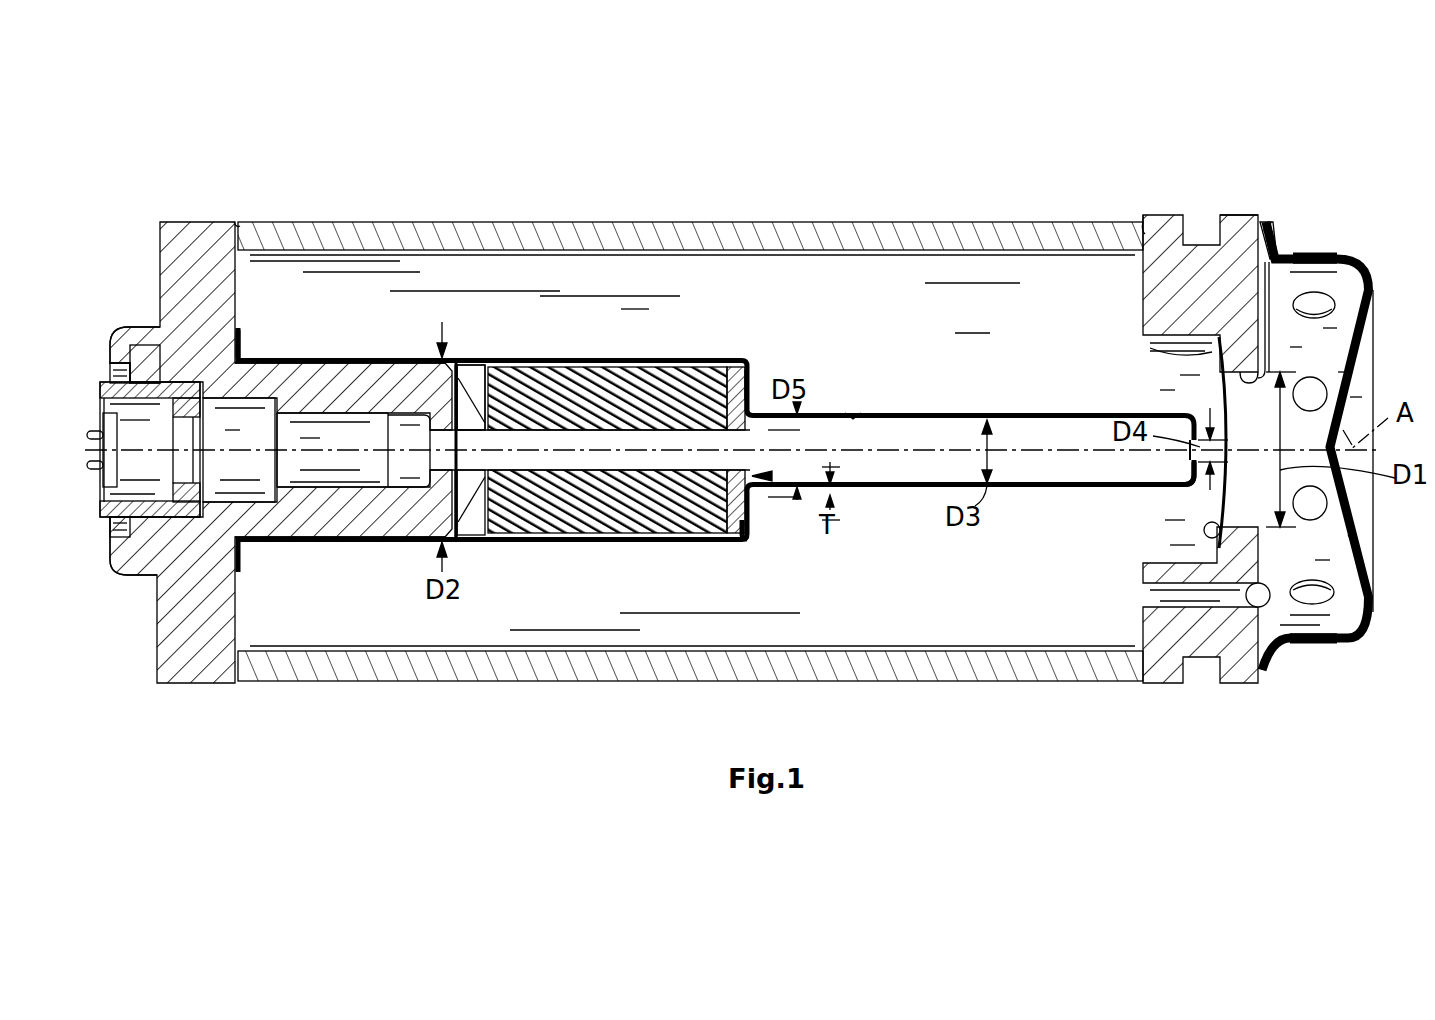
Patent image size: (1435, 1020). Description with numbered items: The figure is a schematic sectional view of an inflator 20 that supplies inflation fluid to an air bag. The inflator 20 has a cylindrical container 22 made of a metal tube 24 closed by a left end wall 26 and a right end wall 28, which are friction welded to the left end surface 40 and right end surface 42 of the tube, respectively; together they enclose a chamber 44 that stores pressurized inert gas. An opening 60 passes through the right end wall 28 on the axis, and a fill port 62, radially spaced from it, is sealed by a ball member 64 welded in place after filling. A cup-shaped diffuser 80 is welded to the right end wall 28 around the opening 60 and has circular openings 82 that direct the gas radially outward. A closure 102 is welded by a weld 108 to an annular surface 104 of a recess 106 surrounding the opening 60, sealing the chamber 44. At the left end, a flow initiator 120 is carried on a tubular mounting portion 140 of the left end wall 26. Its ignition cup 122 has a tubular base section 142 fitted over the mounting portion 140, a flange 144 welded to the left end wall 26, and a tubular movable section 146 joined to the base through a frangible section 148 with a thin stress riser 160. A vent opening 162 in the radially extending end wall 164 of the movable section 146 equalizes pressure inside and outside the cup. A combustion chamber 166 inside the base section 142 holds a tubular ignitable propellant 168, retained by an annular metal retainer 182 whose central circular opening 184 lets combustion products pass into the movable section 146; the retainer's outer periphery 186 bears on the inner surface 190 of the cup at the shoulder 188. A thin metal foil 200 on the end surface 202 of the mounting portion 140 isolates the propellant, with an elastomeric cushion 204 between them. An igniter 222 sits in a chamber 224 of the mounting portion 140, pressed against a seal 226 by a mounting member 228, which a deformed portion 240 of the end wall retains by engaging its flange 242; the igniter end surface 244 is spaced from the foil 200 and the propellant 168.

The inflator 20 is at (1258, 155).
The cylindrical container 22 is at (1128, 215).
The metal tube 24 is at (680, 222).
The left end wall 26 is at (203, 219).
The right end wall 28 is at (1163, 215).
The left end surface 40 is at (232, 227).
The right end surface 42 is at (1150, 217).
The chamber 44 is at (634, 297).
The opening 60 is at (1268, 285).
The fill port 62 is at (1143, 597).
The ball member 64 is at (1270, 597).
The cup-shaped diffuser 80 is at (1372, 272).
The circular openings 82 is at (1318, 256).
The closure 102 is at (1218, 410).
The annular surface 104 is at (1220, 525).
The recess 106 is at (1140, 550).
The weld 108 is at (1213, 357).
The flow initiator 120 is at (743, 350).
The ignition cup 122 is at (752, 358).
The tubular mounting portion 140 is at (348, 385).
The tubular base section 142 is at (296, 360).
The flange 144 is at (243, 345).
The tubular movable section 146 is at (1032, 411).
The frangible section 148 is at (853, 405).
The stress riser 160 is at (852, 488).
The vent opening 162 is at (1192, 452).
The radially extending end wall 164 is at (1190, 496).
The combustion chamber 166 is at (478, 366).
The ignitable propellant 168 is at (640, 392).
The annular metal retainer 182 is at (783, 493).
The circular opening 184 is at (740, 468).
The outer periphery 186 is at (731, 542).
The shoulder 188 is at (748, 545).
The inner surface 190 is at (647, 525).
The thin metal foil 200 is at (483, 537).
The end surface 202 is at (458, 365).
The elastomeric cushion 204 is at (462, 540).
The igniter 222 is at (305, 467).
The chamber 224 is at (408, 463).
The seal 226 is at (282, 490).
The mounting member 228 is at (147, 350).
The deformed portion 240 is at (107, 550).
The flange 242 is at (150, 330).
The end surface 244 is at (390, 470).